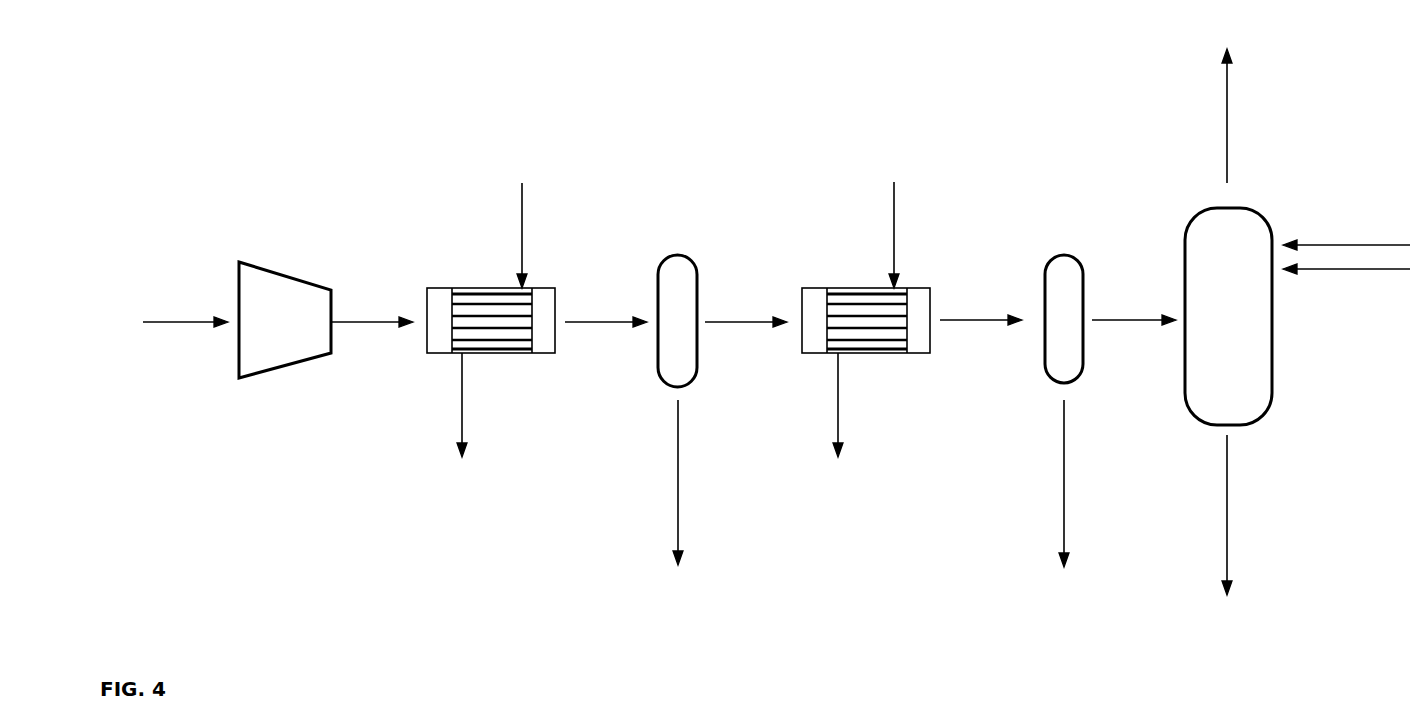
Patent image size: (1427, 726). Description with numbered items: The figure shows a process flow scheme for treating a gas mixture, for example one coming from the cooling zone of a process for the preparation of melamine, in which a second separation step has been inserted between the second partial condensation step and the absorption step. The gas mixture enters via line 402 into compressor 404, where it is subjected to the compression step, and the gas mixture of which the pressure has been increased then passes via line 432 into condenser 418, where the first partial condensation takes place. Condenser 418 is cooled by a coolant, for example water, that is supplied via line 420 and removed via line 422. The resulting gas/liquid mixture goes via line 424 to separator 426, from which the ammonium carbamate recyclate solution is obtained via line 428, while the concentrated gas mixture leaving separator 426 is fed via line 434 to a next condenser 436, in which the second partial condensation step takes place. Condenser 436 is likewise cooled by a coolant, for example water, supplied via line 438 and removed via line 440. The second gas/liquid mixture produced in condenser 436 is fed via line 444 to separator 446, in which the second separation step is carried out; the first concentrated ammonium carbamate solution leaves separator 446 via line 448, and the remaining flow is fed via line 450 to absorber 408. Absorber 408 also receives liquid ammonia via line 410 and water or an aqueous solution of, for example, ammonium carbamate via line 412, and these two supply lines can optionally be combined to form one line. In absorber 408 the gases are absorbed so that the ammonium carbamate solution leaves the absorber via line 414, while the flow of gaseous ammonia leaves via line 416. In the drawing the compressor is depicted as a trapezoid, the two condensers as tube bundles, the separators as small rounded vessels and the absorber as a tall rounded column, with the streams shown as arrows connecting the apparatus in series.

The line 402 is at (185, 312).
The compressor 404 is at (268, 332).
The line 432 is at (372, 312).
The condenser 418 is at (458, 279).
The line 420 is at (539, 235).
The line 422 is at (480, 405).
The line 424 is at (606, 311).
The separator 426 is at (670, 244).
The line 428 is at (697, 482).
The line 434 is at (746, 311).
The condenser 436 is at (845, 279).
The line 438 is at (911, 235).
The line 440 is at (856, 405).
The line 444 is at (981, 310).
The separator 446 is at (1038, 244).
The line 448 is at (1083, 483).
The line 450 is at (1134, 310).
The absorber 408 is at (1213, 334).
The line 410 is at (1352, 235).
The line 412 is at (1352, 279).
The line 414 is at (1253, 515).
The line 416 is at (1252, 116).